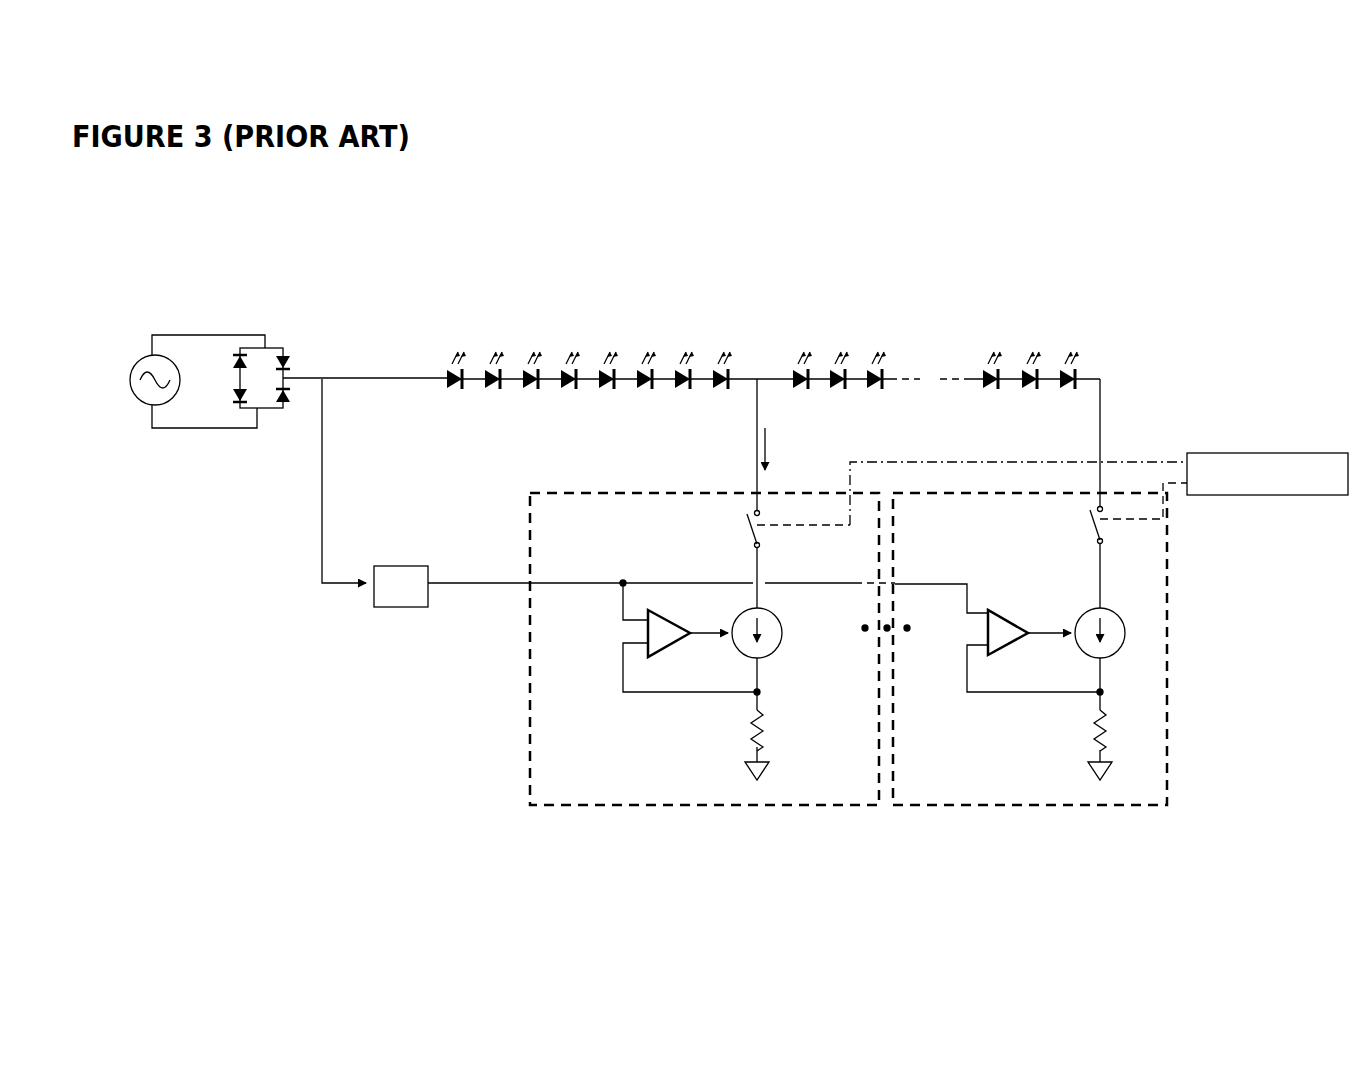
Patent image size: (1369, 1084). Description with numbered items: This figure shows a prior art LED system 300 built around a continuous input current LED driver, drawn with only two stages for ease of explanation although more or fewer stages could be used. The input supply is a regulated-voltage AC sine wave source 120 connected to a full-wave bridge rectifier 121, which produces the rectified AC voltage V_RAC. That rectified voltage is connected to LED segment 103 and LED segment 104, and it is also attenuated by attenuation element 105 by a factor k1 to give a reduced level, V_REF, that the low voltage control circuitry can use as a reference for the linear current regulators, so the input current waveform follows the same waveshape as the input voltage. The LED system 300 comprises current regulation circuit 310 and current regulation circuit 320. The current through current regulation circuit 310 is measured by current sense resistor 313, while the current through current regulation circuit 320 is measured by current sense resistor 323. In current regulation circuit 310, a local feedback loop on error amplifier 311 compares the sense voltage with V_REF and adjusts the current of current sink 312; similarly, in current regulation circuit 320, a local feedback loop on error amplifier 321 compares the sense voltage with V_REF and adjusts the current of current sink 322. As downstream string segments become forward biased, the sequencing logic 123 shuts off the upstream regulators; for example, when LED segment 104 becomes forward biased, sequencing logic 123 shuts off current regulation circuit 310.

The LED system 300 is at (735, 458).
The LED segment 103 is at (584, 314).
The LED segment 104 is at (930, 318).
The attenuation element 105 is at (364, 613).
The regulated-voltage AC sine wave source 120 is at (128, 400).
The full-wave bridge rectifier 121 is at (235, 410).
The sequencing logic 123 is at (1279, 500).
The current regulation circuit 310 is at (704, 683).
The error amplifier 311 is at (626, 630).
The current sink 312 is at (792, 653).
The current sense resistor 313 is at (738, 731).
The current regulation circuit 320 is at (1030, 683).
The error amplifier 321 is at (974, 630).
The current sink 322 is at (1134, 650).
The current sense resistor 323 is at (1075, 729).